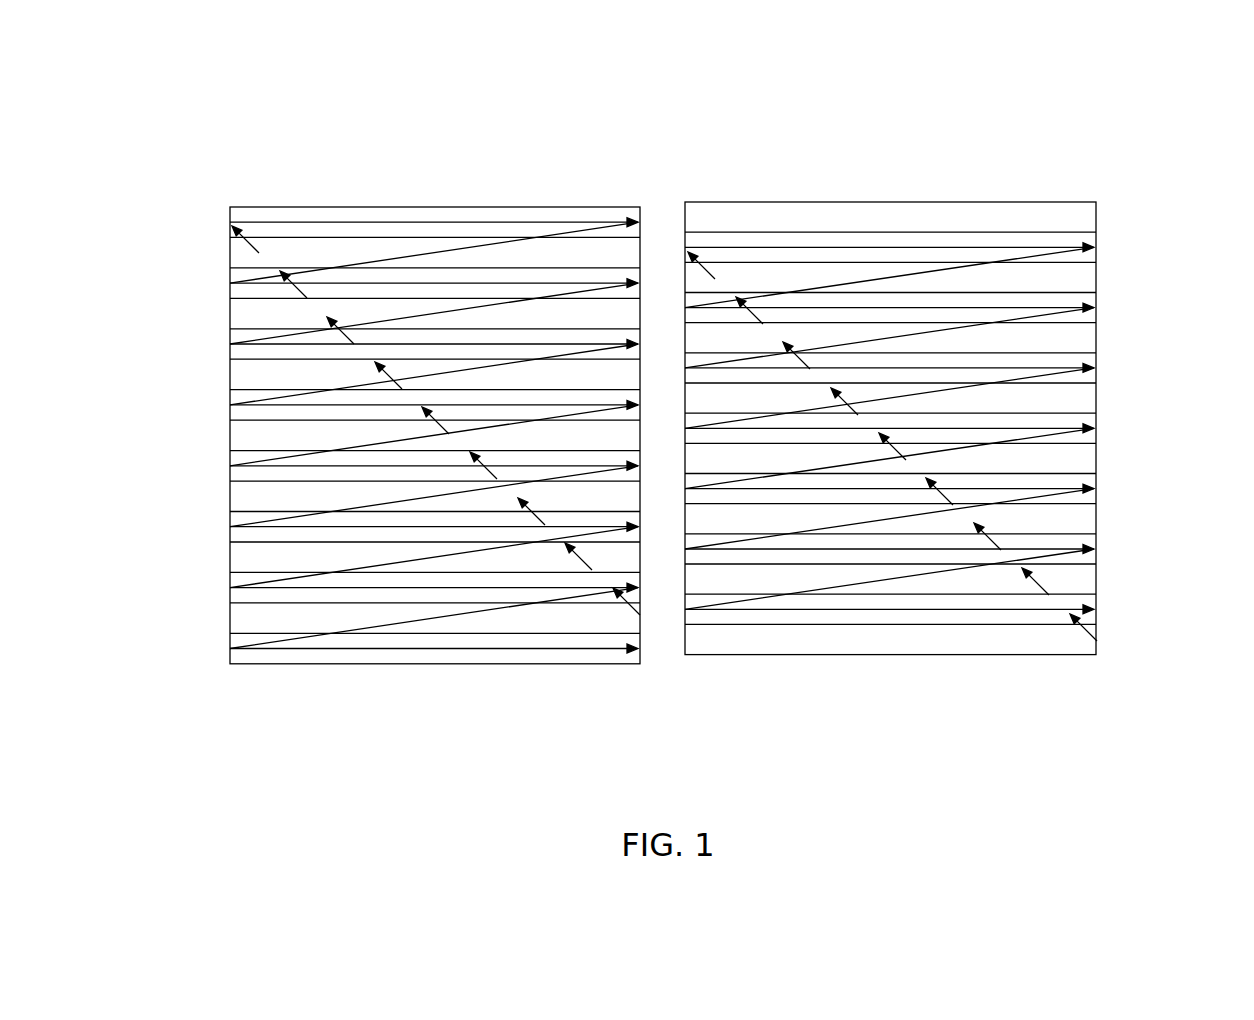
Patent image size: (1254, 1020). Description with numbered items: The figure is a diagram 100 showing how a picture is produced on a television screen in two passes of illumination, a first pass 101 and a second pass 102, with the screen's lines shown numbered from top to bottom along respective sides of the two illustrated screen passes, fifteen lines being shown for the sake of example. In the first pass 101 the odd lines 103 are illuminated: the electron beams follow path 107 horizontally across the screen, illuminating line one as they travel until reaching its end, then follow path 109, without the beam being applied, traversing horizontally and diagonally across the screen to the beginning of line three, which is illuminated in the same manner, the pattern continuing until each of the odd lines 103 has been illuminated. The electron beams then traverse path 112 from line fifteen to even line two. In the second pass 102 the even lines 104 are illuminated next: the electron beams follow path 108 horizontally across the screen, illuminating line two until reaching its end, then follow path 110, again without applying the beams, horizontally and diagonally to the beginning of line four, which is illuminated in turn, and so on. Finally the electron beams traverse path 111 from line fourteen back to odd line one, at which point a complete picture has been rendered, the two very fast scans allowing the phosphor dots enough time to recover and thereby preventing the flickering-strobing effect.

The diagram 100 is at (1057, 104).
The first pass 101 is at (341, 206).
The second pass 102 is at (796, 201).
The odd lines 103 is at (200, 336).
The even lines 104 is at (1130, 357).
The path 107 is at (407, 221).
The path 108 is at (865, 246).
The path 109 is at (482, 244).
The path 110 is at (942, 269).
The path 111 is at (537, 517).
The path 112 is at (987, 536).